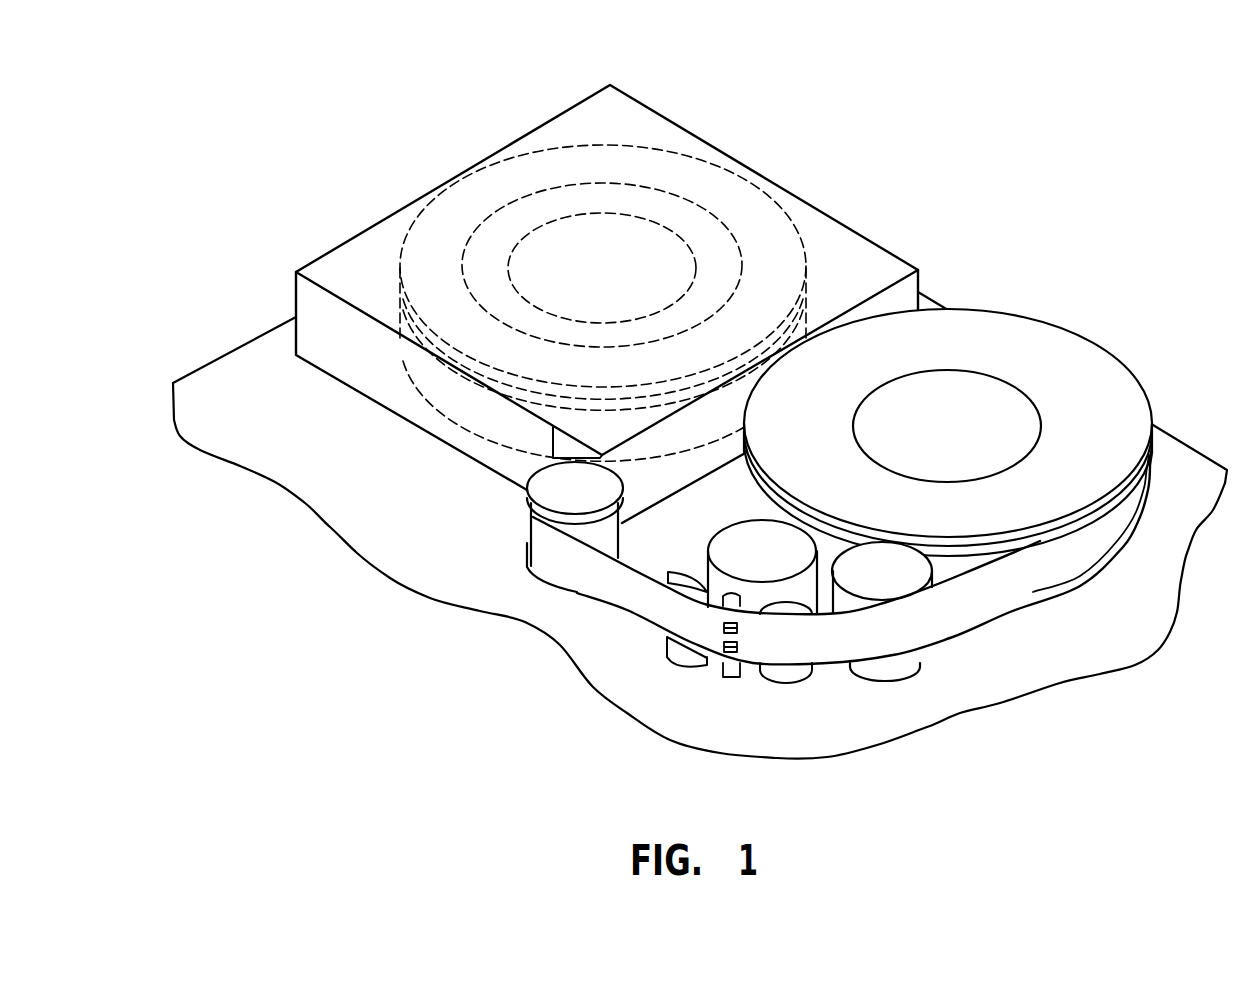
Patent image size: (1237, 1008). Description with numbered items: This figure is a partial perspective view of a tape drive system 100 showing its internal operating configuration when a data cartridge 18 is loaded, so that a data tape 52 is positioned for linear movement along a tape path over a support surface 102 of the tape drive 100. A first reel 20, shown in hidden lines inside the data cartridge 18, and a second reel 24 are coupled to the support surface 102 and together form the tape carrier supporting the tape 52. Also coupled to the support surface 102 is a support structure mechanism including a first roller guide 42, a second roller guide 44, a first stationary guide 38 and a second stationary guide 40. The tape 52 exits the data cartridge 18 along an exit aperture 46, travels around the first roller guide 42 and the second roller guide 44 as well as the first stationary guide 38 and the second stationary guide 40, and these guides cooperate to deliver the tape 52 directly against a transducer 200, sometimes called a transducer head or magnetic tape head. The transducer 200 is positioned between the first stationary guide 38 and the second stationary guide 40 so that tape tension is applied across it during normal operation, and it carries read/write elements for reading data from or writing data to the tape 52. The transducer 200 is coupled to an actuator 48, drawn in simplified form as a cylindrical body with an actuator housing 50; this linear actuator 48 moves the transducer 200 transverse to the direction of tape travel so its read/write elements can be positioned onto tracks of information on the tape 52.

The tape drive system 100 is at (1007, 157).
The support surface 102 is at (227, 372).
The data cartridge 18 is at (760, 172).
The first reel 20 is at (493, 180).
The second reel 24 is at (1087, 363).
The exit aperture 46 is at (550, 462).
The first roller guide 42 is at (543, 492).
The actuator housing 50 is at (727, 542).
The actuator 48 is at (697, 556).
The first stationary guide 38 is at (673, 652).
The second stationary guide 40 is at (790, 680).
The second roller guide 44 is at (908, 670).
The transducer 200 is at (727, 675).
The data tape 52 is at (973, 603).